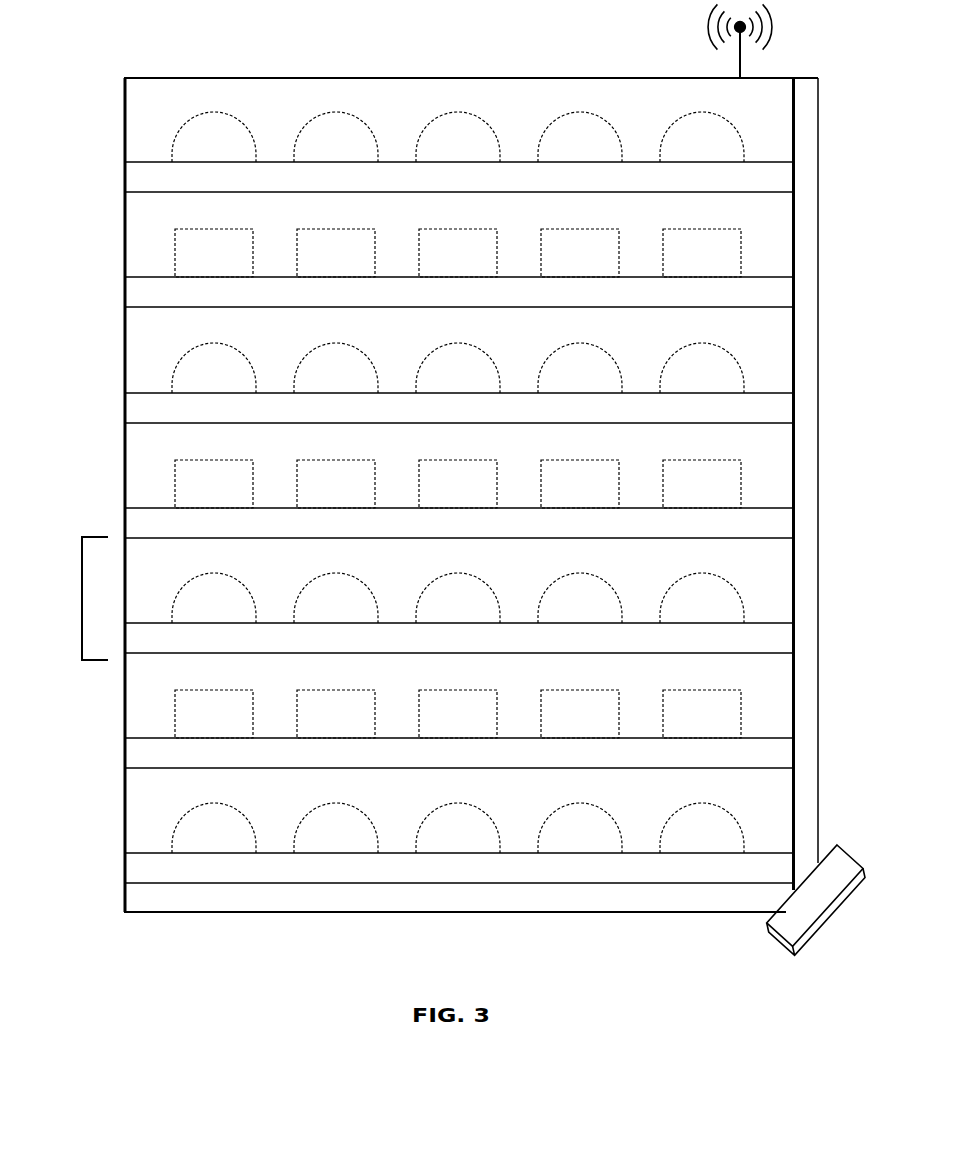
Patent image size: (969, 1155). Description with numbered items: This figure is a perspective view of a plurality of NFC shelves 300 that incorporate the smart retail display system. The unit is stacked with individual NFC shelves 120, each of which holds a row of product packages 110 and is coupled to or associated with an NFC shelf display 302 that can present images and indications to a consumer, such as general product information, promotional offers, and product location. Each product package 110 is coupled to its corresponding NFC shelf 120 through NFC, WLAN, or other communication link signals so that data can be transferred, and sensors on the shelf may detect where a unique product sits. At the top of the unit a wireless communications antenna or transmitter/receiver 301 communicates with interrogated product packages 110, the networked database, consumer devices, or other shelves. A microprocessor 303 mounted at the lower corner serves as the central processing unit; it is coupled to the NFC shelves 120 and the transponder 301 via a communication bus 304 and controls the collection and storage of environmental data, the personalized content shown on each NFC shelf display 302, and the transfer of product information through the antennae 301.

The plurality of NFC shelves 300 is at (359, 48).
The wireless communications antenna or transmitter/receiver 301 is at (718, 41).
The product package 110 is at (458, 474).
The NFC shelf display 302 is at (458, 522).
The communication bus 304 is at (824, 484).
The NFC shelf 120 is at (72, 596).
The microprocessor 303 is at (804, 904).